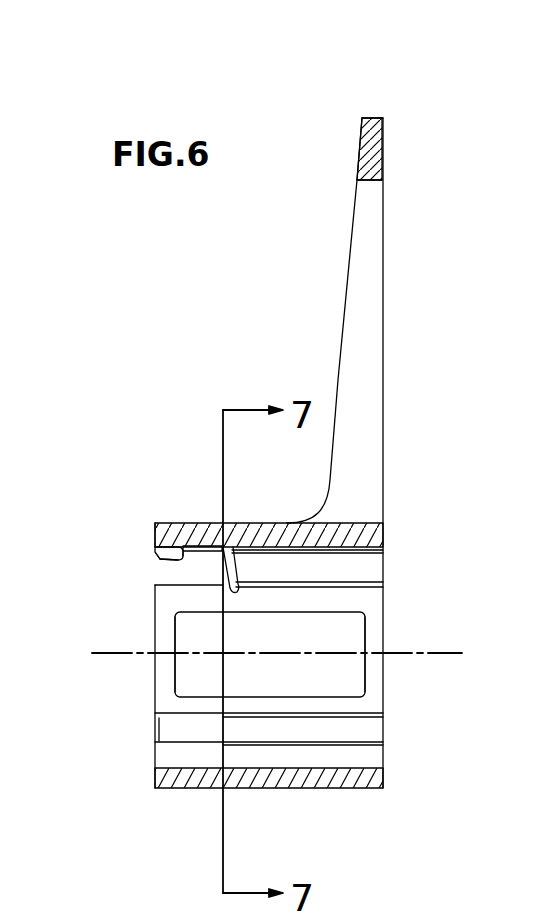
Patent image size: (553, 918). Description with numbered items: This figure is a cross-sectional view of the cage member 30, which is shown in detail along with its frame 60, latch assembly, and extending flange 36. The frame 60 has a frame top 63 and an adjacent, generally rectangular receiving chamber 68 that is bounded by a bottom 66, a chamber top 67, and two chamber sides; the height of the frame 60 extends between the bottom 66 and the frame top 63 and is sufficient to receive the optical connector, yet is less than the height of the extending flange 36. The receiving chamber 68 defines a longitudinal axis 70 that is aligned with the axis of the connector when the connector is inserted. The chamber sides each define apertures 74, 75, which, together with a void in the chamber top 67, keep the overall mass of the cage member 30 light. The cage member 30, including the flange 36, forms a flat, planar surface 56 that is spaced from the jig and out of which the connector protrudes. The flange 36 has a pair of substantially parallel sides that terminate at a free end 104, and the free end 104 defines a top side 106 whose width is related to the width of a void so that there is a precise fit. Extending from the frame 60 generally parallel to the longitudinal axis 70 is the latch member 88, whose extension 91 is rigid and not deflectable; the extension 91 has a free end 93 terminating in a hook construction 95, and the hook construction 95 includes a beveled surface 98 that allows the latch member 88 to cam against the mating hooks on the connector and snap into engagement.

The cage member 30 is at (455, 103).
The extending flange 36 is at (322, 240).
The flat, planar surface 56 is at (384, 322).
The free end 104 is at (379, 118).
The top side 106 is at (362, 118).
The frame top 63 is at (272, 524).
The latch member 88 is at (165, 524).
The extension 91 is at (236, 524).
The free end 93 is at (157, 535).
The beveled surface 98 is at (170, 553).
The hook construction 95 is at (174, 559).
The chamber top 67 is at (156, 587).
The receiving chamber 68 is at (316, 607).
The aperture 74 is at (365, 638).
The aperture 75 is at (176, 645).
The longitudinal axis 70 is at (107, 657).
The frame 60 is at (385, 715).
The bottom 66 is at (268, 789).